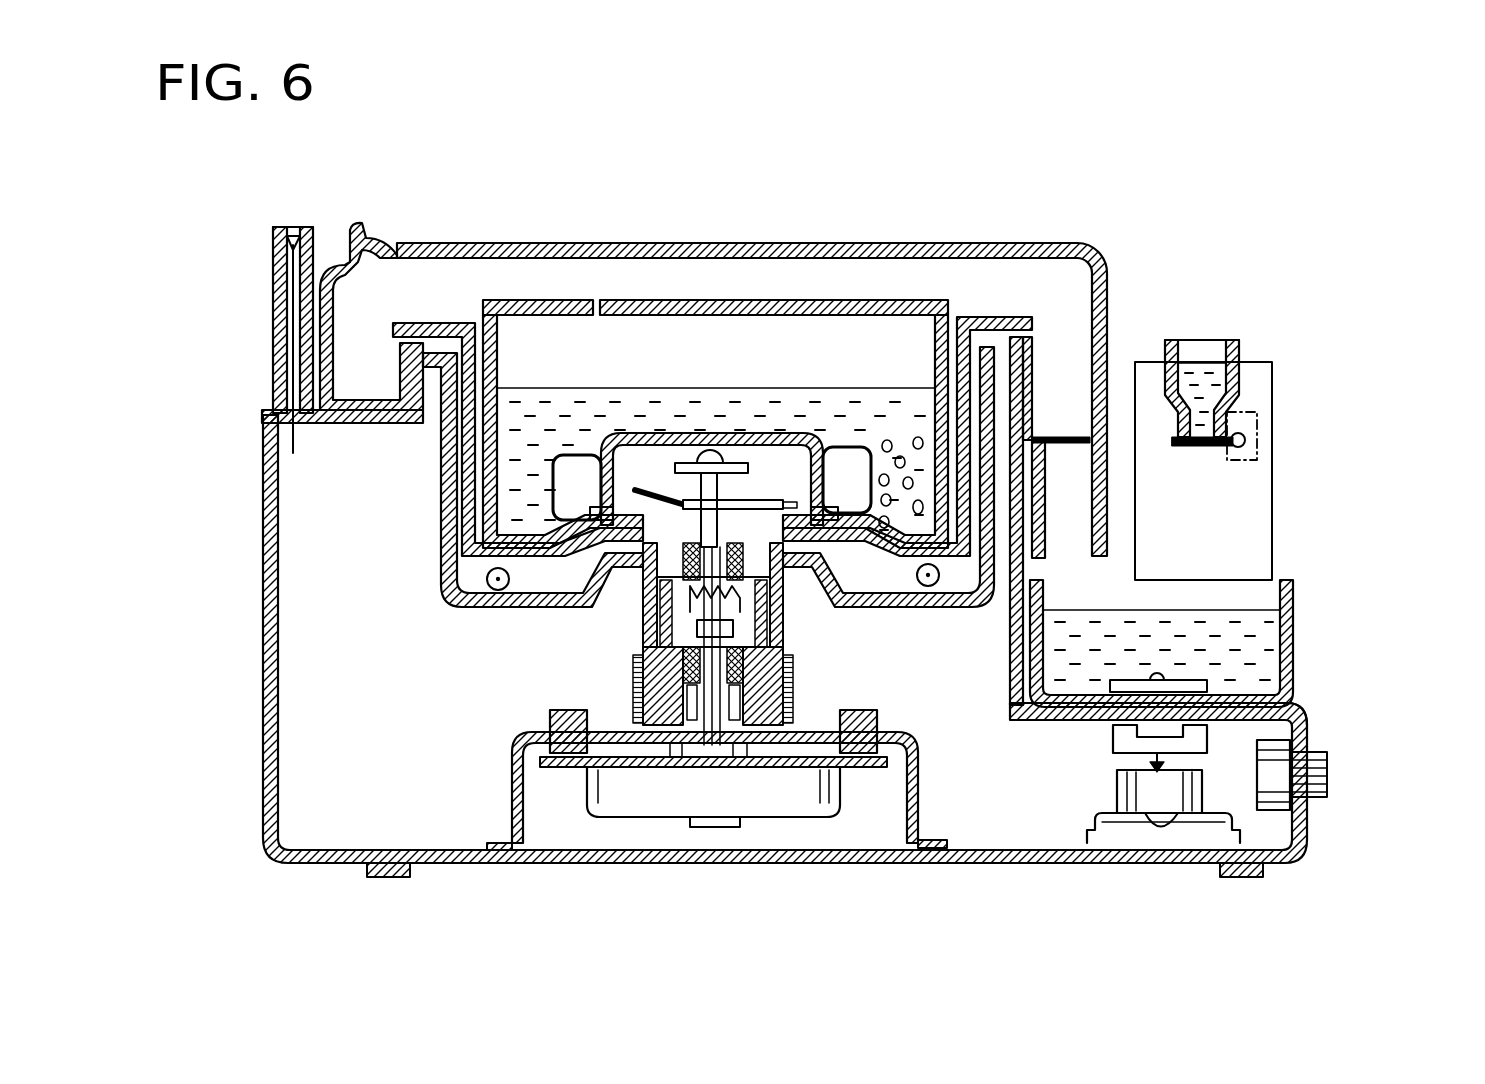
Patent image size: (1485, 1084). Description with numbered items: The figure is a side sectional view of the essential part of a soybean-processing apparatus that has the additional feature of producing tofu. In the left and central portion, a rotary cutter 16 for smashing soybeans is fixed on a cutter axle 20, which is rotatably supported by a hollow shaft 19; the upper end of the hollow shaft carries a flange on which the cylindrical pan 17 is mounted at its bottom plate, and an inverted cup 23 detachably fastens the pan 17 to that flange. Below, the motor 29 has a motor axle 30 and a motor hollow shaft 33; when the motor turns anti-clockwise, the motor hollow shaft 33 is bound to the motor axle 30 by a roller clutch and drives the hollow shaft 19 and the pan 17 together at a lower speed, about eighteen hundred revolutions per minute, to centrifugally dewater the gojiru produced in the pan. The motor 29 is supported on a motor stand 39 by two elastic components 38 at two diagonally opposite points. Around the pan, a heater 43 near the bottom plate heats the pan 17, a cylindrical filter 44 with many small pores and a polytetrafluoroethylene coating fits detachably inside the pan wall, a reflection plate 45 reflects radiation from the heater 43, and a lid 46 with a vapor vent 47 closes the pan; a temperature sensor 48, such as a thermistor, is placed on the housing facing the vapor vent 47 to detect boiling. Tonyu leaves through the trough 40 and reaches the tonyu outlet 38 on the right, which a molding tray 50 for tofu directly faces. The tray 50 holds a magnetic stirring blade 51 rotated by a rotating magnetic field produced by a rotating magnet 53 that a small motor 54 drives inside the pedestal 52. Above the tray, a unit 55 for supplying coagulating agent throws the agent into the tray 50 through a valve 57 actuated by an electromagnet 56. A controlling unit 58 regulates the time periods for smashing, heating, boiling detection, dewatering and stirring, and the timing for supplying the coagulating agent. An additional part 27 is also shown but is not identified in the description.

The rotary cutter 16 is at (760, 500).
The cylindrical pan 17 is at (1000, 390).
The hollow shaft 19 is at (505, 603).
The cutter axle 20 is at (643, 552).
The inverted cup 23 is at (770, 432).
The cushion pad 27 is at (557, 480).
The motor 29 is at (757, 800).
The motor axle 30 is at (707, 745).
The motor hollow shaft 33 is at (790, 767).
The elastic component 38 is at (555, 760).
The motor stand 39 is at (925, 797).
The trough 40 is at (357, 373).
The heater 43 is at (470, 580).
The cylindrical filter 44 is at (495, 330).
The reflection plate 45 is at (950, 607).
The lid 46 is at (772, 250).
The vapor vent 47 is at (363, 247).
The temperature sensor 48 is at (288, 232).
The molding tray 50 is at (1297, 640).
The magnetic stirring blade 51 is at (1197, 683).
The pedestal 52 is at (1298, 712).
The rotating magnet 53 is at (1223, 733).
The small motor 54 is at (1160, 800).
The unit for supplying coagulating agent 55 is at (1240, 345).
The electromagnet 56 is at (1257, 417).
The valve 57 is at (1200, 446).
The controlling unit 58 is at (1275, 772).